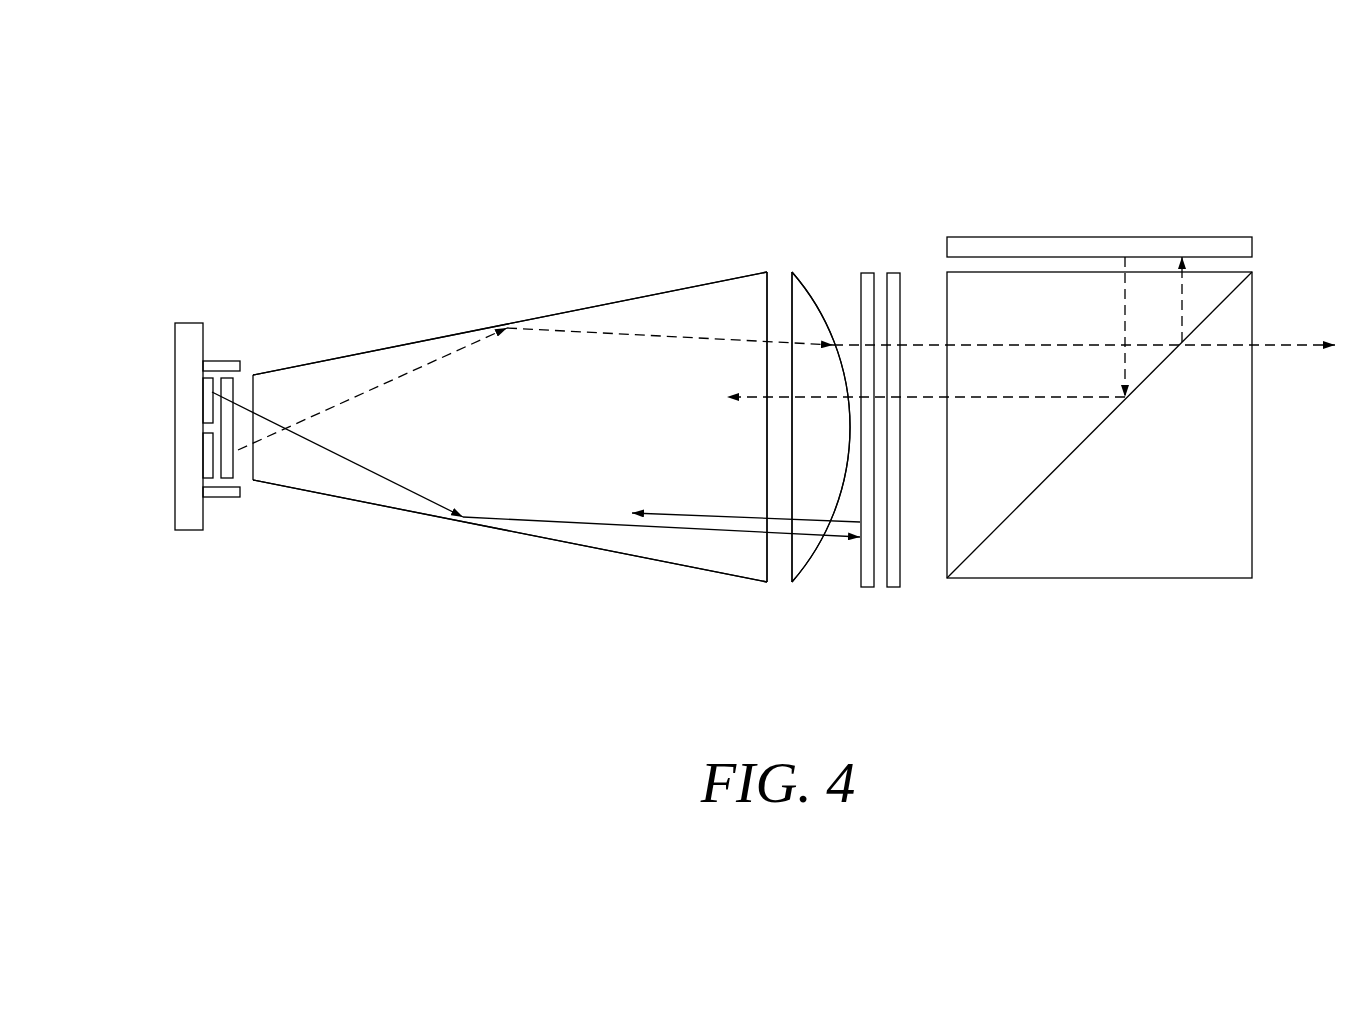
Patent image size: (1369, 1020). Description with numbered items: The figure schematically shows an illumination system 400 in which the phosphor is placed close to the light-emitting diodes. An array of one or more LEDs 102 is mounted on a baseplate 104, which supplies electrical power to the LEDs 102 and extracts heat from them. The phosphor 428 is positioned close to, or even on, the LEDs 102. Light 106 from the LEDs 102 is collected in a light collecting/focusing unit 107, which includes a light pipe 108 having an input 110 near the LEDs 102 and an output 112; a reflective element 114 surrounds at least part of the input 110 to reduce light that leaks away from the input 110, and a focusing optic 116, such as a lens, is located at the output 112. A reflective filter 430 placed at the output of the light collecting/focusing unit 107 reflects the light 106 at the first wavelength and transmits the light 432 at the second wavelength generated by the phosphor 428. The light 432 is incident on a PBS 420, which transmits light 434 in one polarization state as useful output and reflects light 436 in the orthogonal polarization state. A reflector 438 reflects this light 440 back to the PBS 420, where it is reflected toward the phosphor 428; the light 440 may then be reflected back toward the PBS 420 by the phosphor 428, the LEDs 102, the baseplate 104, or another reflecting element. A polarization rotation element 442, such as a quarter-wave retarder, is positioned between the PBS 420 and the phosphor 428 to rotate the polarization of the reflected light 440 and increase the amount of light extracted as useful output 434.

The illumination system 400 is at (195, 123).
The LEDs 102 is at (207, 403).
The baseplate 104 is at (175, 467).
The light 106 is at (367, 468).
The light collecting/focusing unit 107 is at (547, 558).
The light pipe 108 is at (437, 337).
The input 110 is at (250, 375).
The output 112 is at (768, 303).
The reflective element 114 is at (214, 360).
The focusing optic 116 is at (812, 293).
The PBS 420 is at (1150, 580).
The phosphor 428 is at (235, 473).
The reflective filter 430 is at (858, 568).
The light at the second wavelength 432 is at (605, 333).
The useful output light 434 is at (1298, 347).
The reflected light 436 is at (1183, 292).
The reflector 438 is at (988, 237).
The reflected light 440 is at (1125, 270).
The polarization rotation element 442 is at (905, 592).